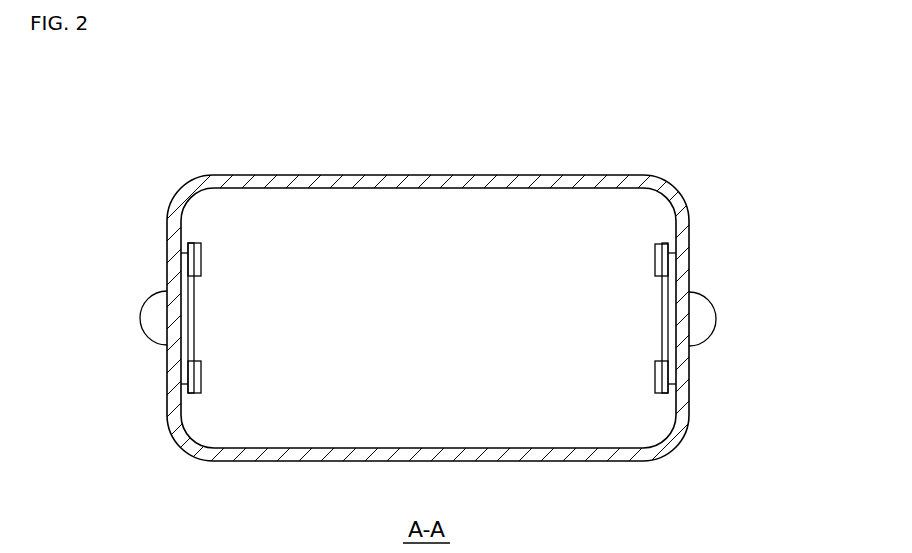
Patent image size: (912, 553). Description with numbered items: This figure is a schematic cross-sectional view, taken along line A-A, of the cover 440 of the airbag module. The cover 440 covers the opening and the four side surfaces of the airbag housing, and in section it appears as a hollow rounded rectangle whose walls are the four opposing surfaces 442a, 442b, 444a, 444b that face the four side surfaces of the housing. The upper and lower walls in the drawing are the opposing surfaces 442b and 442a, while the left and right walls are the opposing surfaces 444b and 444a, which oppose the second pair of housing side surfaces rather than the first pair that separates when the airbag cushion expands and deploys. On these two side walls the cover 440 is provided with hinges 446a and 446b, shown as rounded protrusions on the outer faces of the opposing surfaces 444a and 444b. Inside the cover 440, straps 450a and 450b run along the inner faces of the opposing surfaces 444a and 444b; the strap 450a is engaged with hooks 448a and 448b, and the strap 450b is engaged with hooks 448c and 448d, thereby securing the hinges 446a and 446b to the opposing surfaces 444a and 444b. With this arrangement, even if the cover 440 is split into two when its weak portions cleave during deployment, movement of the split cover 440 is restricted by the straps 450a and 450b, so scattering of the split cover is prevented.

The cover 440 is at (186, 115).
The opposing surface 442a is at (523, 461).
The opposing surface 442b is at (535, 175).
The opposing surface 444a is at (684, 383).
The opposing surface 444b is at (173, 376).
The hinge 446a is at (716, 319).
The hinge 446b is at (140, 318).
The hook 448a is at (655, 259).
The hook 448b is at (655, 376).
The hook 448c is at (202, 258).
The hook 448d is at (202, 376).
The strap 450a is at (662, 317).
The strap 450b is at (194, 317).